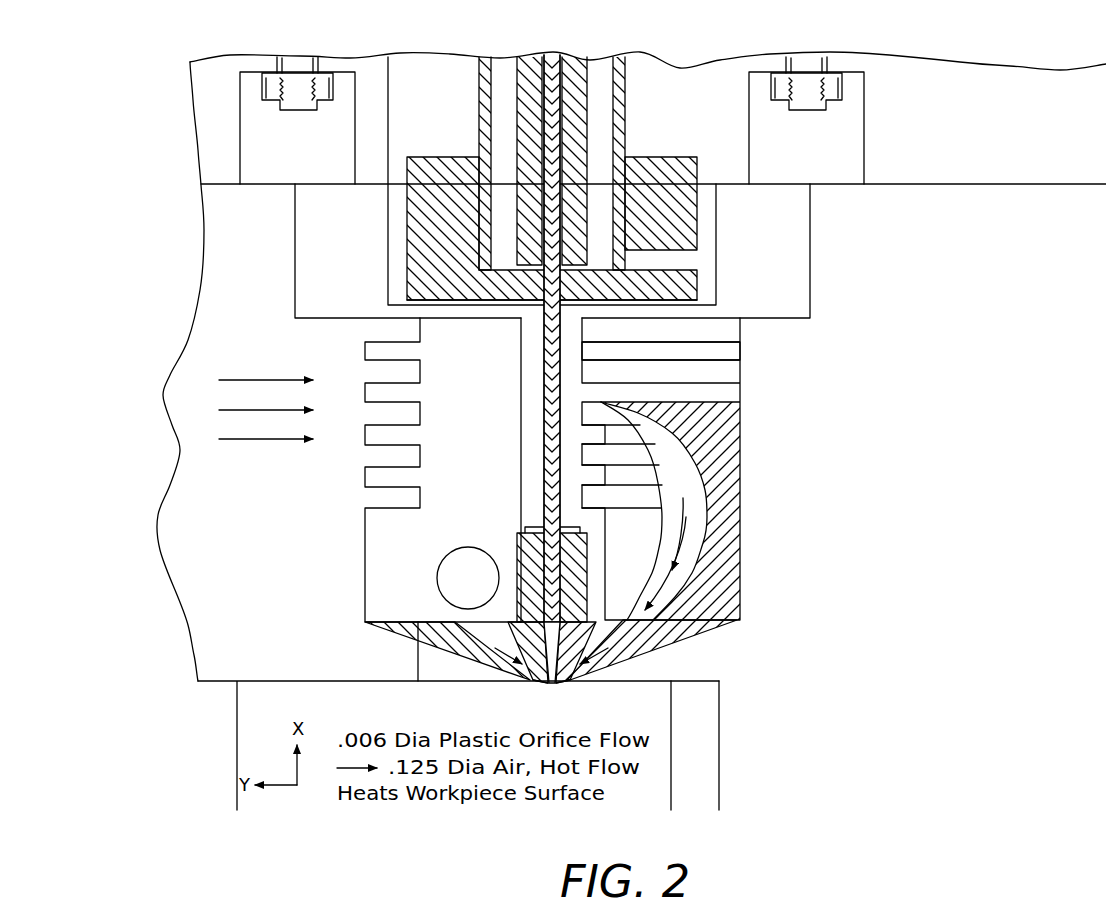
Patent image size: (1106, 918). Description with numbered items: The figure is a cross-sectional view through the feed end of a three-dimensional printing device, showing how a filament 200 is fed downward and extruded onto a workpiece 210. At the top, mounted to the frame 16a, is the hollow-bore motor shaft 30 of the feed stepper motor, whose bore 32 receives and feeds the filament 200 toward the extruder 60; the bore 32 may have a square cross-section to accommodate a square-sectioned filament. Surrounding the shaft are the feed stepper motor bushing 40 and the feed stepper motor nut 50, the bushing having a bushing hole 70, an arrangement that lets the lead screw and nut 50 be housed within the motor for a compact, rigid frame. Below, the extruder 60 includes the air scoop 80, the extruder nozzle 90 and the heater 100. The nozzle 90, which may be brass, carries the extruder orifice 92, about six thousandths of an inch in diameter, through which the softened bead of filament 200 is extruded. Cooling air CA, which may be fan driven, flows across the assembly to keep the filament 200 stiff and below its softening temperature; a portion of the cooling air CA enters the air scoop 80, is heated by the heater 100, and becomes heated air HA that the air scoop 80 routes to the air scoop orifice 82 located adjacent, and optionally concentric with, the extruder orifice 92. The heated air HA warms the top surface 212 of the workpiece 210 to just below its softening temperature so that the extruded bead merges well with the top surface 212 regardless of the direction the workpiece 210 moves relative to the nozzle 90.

The machine frame / mounting plate 16a is at (968, 168).
The hollow-bore motor shaft 30 is at (570, 245).
The bore 32 is at (560, 183).
The feed stepper motor bushing 40 is at (627, 265).
The feed stepper motor nut 50 is at (677, 288).
The extruder 60 is at (723, 472).
The bushing hole 70 is at (560, 340).
The air scoop 80 is at (695, 540).
The heated air HA is at (672, 595).
The extruder nozzle 90 is at (573, 634).
The extruder orifice 92 is at (548, 684).
The heater 100 is at (455, 578).
The filament 200 is at (560, 372).
The workpiece 210 is at (643, 693).
The top surface 212 is at (720, 676).
The air scoop orifice 82 is at (565, 683).
The cooling air CA is at (260, 439).